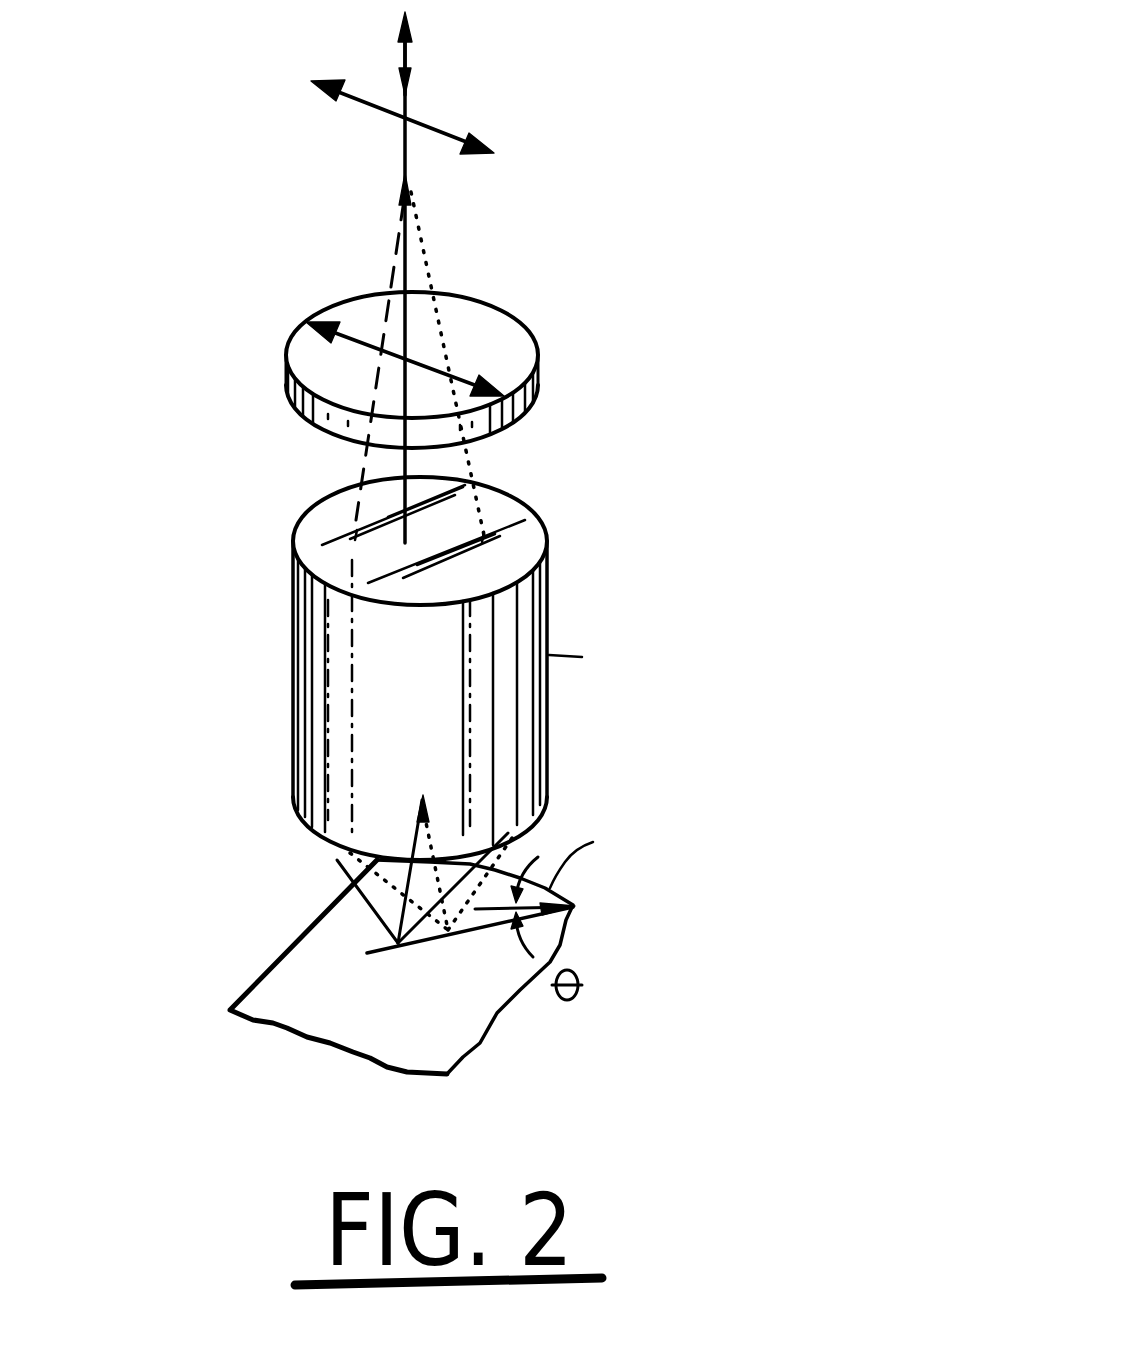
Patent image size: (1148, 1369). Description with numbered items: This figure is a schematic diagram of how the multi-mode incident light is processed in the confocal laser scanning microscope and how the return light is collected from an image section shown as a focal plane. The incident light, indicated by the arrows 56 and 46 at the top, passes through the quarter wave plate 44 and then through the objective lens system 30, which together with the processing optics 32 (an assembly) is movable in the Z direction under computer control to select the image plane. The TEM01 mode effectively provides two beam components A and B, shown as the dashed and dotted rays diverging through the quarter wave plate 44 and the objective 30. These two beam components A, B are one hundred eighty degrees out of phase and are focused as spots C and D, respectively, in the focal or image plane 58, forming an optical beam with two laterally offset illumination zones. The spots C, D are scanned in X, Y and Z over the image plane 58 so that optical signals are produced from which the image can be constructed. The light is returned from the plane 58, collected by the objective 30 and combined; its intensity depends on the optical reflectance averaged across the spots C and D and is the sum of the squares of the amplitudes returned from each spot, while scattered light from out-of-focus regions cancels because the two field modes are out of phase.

The processing optics 32 is at (770, 238).
The direction arrow 56 is at (407, 58).
The direction arrow 46 is at (448, 128).
The quarter wave plate 44 is at (543, 347).
The objective lens system 30 is at (542, 543).
The focal or image plane 58 is at (450, 1040).
The beam component A is at (363, 463).
The beam component B is at (470, 472).
The spot C is at (407, 953).
The spot D is at (449, 938).